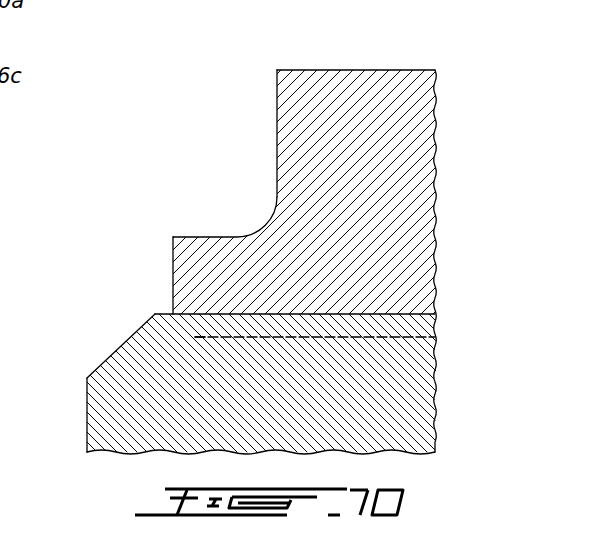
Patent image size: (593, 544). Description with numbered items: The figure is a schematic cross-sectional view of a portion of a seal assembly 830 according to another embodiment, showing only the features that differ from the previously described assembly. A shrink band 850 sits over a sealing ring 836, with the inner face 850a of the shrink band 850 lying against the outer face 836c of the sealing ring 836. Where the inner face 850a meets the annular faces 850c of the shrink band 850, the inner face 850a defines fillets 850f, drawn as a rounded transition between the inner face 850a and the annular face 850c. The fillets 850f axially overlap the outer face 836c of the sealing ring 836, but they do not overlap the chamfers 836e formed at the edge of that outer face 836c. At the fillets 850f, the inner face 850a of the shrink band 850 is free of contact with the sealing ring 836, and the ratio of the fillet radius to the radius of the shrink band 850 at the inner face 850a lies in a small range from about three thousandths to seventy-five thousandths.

The seal assembly 830 is at (198, 145).
The shrink band 850 is at (367, 117).
The inner face 850a is at (392, 337).
The annular face 850c is at (173, 267).
The fillet 850f is at (186, 335).
The sealing ring 836 is at (395, 410).
The outer face 836c is at (370, 314).
The chamfer 836e is at (115, 352).